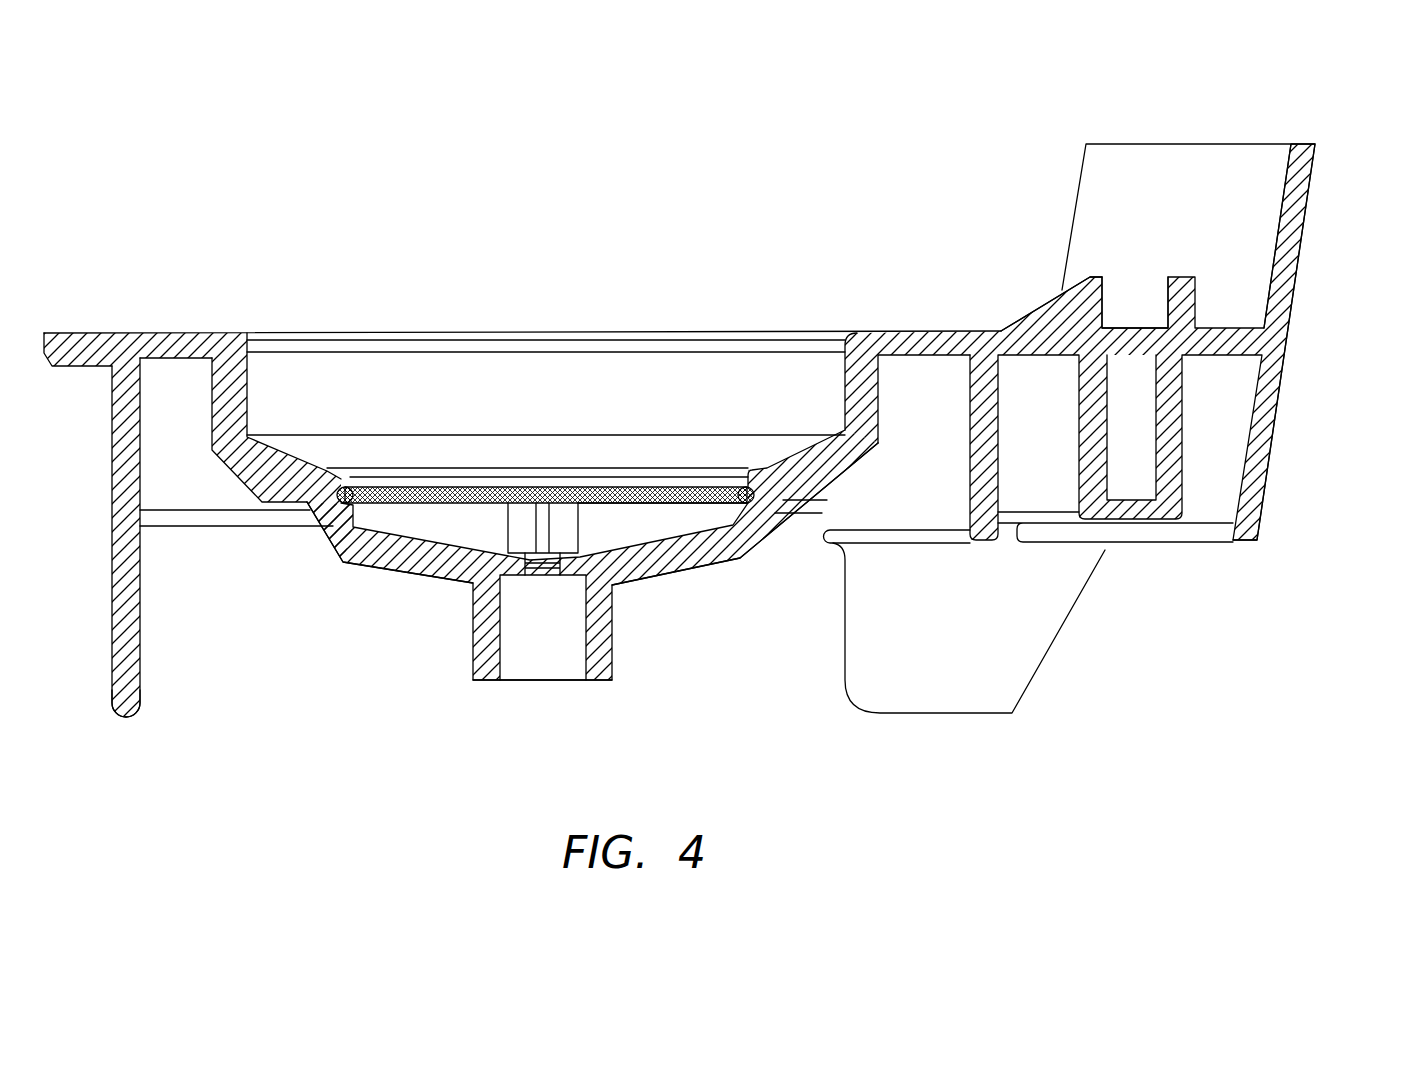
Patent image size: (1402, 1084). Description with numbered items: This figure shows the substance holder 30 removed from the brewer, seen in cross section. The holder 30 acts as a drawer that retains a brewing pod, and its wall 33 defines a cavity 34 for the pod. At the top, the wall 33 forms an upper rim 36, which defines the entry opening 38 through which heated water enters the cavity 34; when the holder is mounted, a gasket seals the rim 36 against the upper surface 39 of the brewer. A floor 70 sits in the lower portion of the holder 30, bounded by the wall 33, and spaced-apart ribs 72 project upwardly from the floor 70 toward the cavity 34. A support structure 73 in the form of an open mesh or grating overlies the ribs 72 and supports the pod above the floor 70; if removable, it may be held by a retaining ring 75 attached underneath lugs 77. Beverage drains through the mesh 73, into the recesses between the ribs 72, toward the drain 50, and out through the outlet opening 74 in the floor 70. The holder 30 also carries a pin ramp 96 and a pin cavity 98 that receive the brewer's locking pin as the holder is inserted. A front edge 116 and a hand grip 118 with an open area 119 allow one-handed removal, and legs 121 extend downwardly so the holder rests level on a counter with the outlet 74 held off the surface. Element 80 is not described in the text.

The substance holder 30 is at (1125, 592).
The wall 33 is at (843, 467).
The cavity 34 is at (768, 402).
The upper rim 36 is at (244, 355).
The entry opening 38 is at (808, 325).
The upper surface 39 is at (179, 330).
The drain 50 is at (533, 577).
The floor 70 is at (410, 518).
The ribs 72 is at (372, 566).
The support structure 73 is at (620, 503).
The outlet opening 74 is at (603, 681).
The retaining ring 75 is at (735, 538).
The lugs 77 is at (743, 485).
The outer skirt 80 is at (112, 480).
The pin ramp 96 is at (1040, 300).
The pin cavity 98 is at (1130, 298).
The front edge 116 is at (1277, 430).
The hand grip 118 is at (1213, 545).
The open area 119 is at (1070, 527).
The legs 121 is at (120, 677).